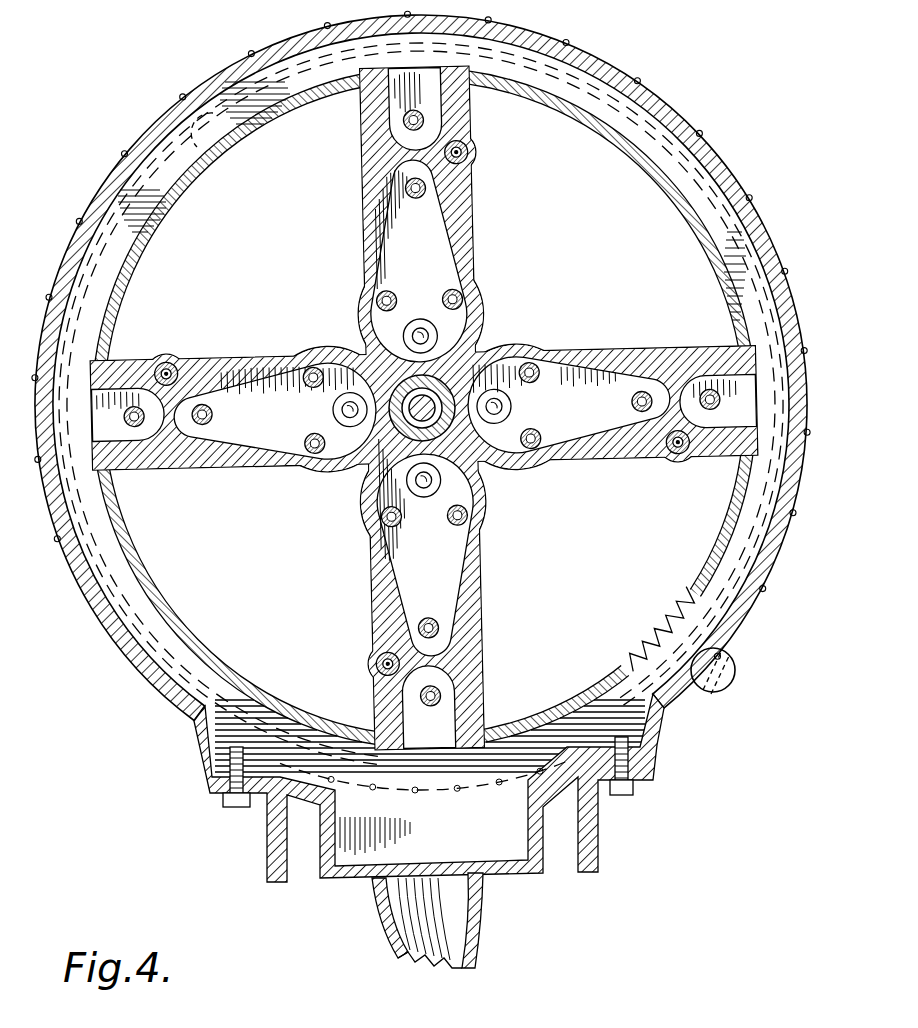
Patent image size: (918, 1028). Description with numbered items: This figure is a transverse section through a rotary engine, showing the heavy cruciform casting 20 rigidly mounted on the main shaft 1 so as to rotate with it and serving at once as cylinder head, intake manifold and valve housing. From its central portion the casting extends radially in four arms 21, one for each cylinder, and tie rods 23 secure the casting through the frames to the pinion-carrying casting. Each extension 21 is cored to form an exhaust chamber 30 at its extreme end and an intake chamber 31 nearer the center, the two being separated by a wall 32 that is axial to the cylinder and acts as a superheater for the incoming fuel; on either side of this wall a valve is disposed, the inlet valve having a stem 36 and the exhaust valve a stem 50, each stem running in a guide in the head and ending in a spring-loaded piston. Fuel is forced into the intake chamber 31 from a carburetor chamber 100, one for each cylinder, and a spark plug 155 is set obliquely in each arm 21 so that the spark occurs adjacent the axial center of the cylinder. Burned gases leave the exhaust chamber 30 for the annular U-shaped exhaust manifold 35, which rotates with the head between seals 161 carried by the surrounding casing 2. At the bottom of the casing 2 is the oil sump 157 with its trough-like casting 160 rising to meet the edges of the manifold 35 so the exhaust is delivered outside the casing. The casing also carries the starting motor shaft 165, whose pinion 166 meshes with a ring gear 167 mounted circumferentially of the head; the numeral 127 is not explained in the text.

The main shaft 1 is at (497, 325).
The casing 2 is at (568, 56).
The casting 20 is at (492, 477).
The extension 21 is at (360, 180).
The tie rod 23 is at (378, 298).
The exhaust chamber 30 is at (433, 88).
The intake chamber 31 is at (412, 226).
The wall 32 is at (205, 407).
The exhaust manifold 35 is at (110, 298).
The stem 36 is at (408, 190).
The stem 50 is at (400, 121).
The carburetor chamber 100 is at (412, 323).
The fillet 127 is at (358, 477).
The spark-plug 155 is at (170, 363).
The sump 157 is at (557, 815).
The casting 160 is at (335, 807).
The seal 161 is at (206, 156).
The shaft 165 is at (720, 688).
The pinion 166 is at (722, 667).
The ring gear 167 is at (678, 632).